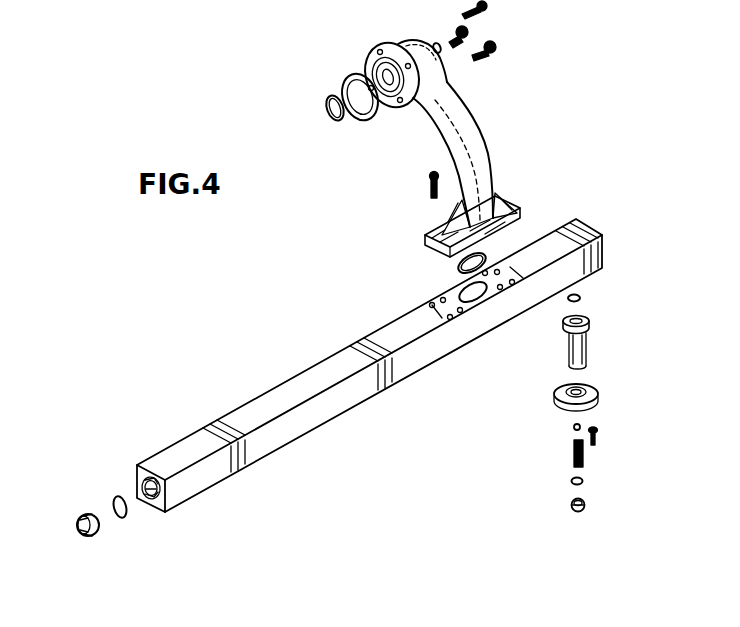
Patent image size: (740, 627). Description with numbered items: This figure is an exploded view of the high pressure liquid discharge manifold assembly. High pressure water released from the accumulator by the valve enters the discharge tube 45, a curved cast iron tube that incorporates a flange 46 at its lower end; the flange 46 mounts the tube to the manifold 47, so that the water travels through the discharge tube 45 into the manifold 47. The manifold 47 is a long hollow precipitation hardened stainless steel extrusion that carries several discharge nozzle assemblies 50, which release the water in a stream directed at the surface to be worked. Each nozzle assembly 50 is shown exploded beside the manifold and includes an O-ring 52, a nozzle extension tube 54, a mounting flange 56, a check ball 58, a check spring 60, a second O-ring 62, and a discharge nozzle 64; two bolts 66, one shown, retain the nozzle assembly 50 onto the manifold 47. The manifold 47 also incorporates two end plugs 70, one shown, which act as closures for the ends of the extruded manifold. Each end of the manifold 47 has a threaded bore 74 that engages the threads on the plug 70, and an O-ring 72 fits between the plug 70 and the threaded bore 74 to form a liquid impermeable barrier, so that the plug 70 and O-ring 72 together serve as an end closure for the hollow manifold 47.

The discharge tube 45 is at (482, 126).
The flange 46 is at (521, 206).
The manifold 47 is at (313, 432).
The discharge nozzle assembly 50 is at (640, 550).
The O-ring 52 is at (581, 296).
The nozzle extension tube 54 is at (592, 330).
The mounting flange 56 is at (588, 386).
The check ball 58 is at (581, 425).
The check spring 60 is at (584, 465).
The O-ring 62 is at (582, 483).
The discharge nozzle 64 is at (584, 511).
The bolt 66 is at (598, 438).
The end plug 70 is at (77, 532).
The O-ring 72 is at (124, 518).
The threaded bore 74 is at (155, 502).